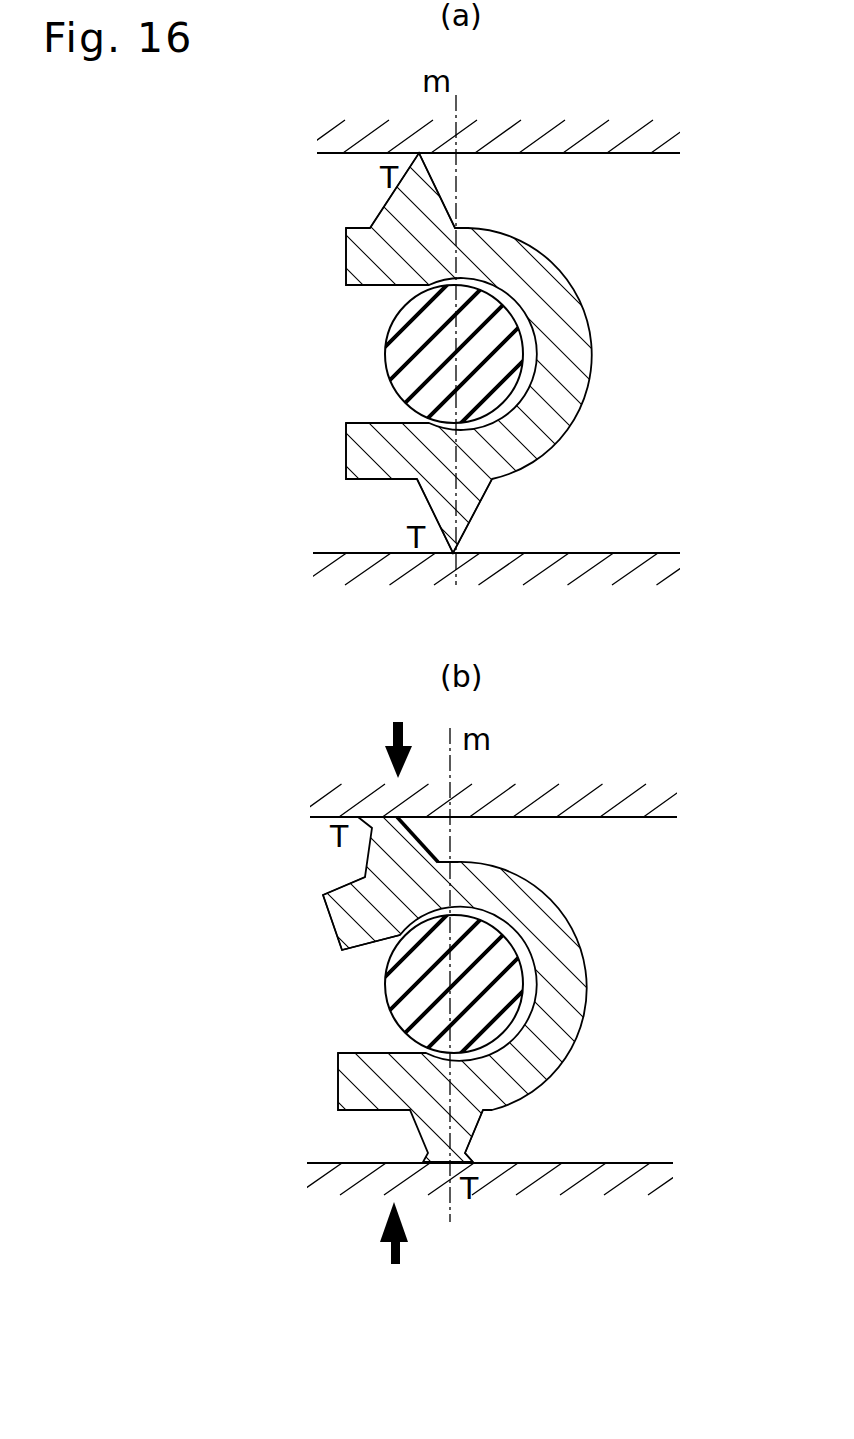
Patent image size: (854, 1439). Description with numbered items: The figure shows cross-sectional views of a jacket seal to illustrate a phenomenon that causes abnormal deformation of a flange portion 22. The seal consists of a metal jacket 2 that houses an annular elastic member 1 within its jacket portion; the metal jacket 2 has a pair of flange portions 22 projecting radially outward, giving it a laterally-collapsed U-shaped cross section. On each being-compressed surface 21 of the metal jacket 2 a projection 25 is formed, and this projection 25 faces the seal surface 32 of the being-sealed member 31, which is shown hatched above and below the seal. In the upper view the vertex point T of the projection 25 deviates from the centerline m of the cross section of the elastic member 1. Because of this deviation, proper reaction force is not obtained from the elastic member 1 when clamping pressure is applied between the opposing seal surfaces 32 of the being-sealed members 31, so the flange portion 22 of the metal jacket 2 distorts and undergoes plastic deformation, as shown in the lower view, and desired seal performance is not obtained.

The elastic member 1 is at (395, 350).
The metal jacket 2 is at (618, 311).
The being-compressed surface 21 is at (365, 225).
The flange portion 22 is at (353, 255).
The projection 25 is at (422, 193).
The guide member 31 is at (388, 130).
The seal surface 32 is at (330, 153).